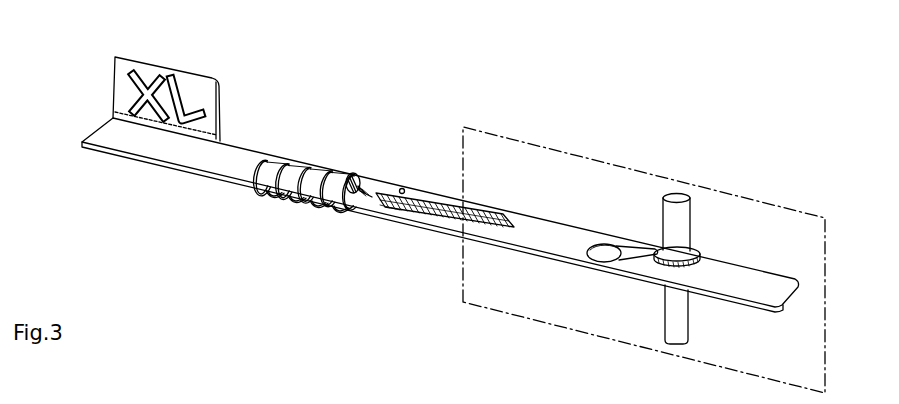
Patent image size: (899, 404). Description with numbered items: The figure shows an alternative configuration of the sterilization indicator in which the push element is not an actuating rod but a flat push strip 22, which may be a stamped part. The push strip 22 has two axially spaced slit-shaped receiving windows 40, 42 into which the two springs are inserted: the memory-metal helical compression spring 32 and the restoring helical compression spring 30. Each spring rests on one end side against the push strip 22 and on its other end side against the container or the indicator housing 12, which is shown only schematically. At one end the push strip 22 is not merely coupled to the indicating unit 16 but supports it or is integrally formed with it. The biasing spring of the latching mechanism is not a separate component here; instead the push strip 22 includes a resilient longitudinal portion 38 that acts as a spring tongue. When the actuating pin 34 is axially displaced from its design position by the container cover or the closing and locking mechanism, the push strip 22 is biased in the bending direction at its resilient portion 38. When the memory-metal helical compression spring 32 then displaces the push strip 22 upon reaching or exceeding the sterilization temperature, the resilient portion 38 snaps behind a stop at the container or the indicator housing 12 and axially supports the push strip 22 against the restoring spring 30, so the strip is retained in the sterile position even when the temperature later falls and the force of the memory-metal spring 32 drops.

The indicator housing 12 is at (770, 203).
The indicating unit 16 is at (113, 62).
The push strip 22 is at (128, 155).
The restoring helical compression spring 30 is at (392, 204).
The memory-metal helical compression spring 32 is at (290, 160).
The actuating pin 34 is at (677, 193).
The resilient longitudinal portion 38 is at (563, 272).
The receiving window 40 is at (355, 172).
The receiving window 42 is at (388, 193).